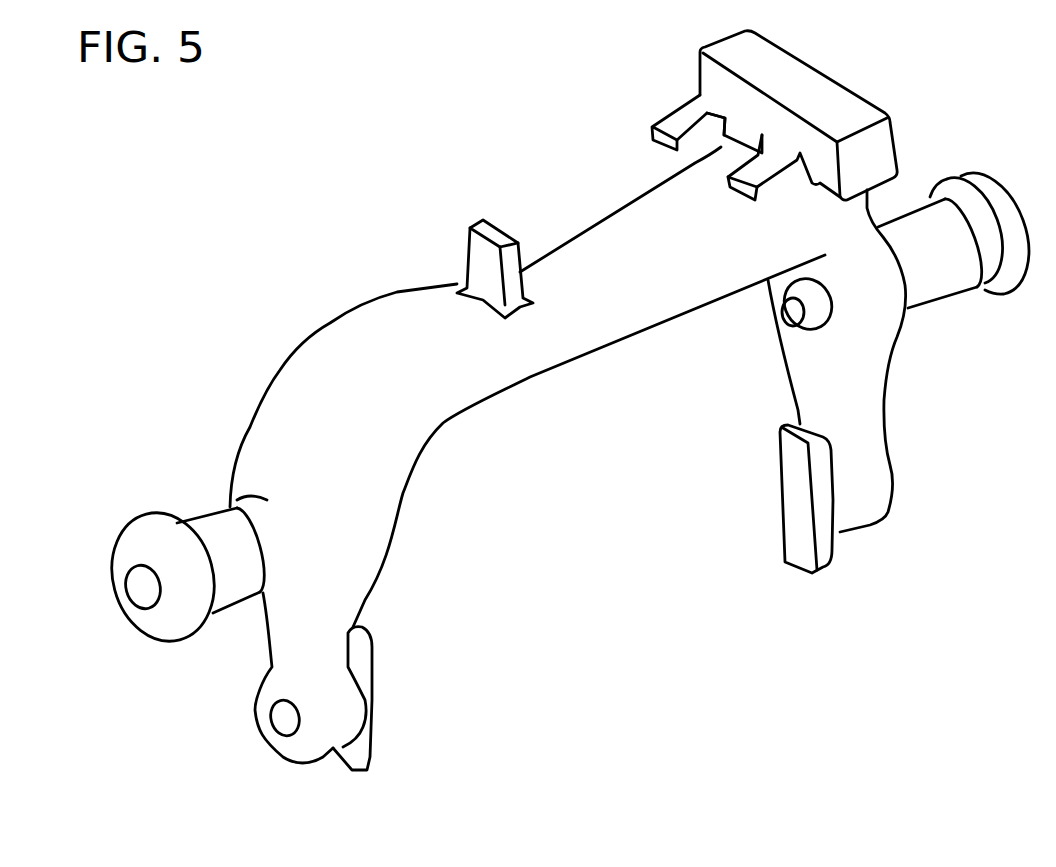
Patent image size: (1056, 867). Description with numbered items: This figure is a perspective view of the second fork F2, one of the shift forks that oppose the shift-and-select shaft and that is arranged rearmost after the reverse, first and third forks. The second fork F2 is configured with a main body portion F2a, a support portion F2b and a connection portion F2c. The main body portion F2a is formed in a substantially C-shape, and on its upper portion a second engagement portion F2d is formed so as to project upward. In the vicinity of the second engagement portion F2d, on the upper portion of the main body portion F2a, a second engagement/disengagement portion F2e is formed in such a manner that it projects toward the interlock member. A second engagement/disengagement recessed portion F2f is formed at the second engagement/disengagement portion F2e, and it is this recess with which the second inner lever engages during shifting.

The second fork F2 is at (452, 48).
The main body portion F2a is at (373, 343).
The support portion F2b is at (203, 535).
The connection portion F2c is at (360, 672).
The second engagement portion F2d is at (492, 262).
The second engagement/disengagement portion F2e is at (683, 115).
The second engagement/disengagement recessed portion F2f is at (728, 160).